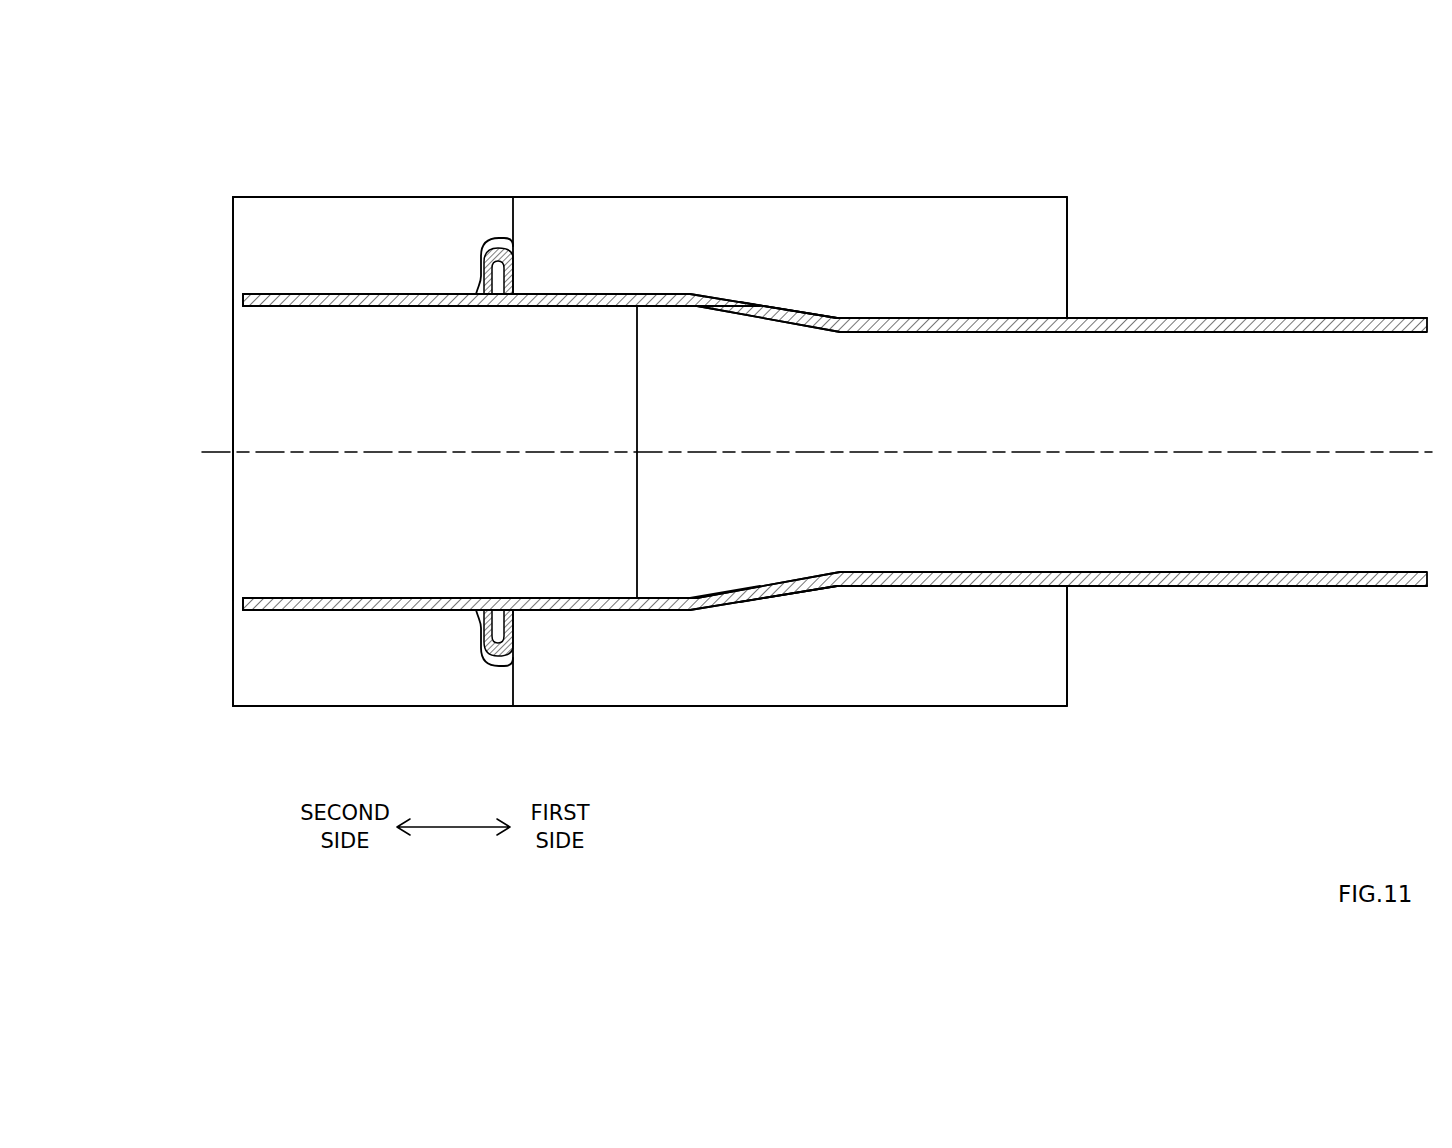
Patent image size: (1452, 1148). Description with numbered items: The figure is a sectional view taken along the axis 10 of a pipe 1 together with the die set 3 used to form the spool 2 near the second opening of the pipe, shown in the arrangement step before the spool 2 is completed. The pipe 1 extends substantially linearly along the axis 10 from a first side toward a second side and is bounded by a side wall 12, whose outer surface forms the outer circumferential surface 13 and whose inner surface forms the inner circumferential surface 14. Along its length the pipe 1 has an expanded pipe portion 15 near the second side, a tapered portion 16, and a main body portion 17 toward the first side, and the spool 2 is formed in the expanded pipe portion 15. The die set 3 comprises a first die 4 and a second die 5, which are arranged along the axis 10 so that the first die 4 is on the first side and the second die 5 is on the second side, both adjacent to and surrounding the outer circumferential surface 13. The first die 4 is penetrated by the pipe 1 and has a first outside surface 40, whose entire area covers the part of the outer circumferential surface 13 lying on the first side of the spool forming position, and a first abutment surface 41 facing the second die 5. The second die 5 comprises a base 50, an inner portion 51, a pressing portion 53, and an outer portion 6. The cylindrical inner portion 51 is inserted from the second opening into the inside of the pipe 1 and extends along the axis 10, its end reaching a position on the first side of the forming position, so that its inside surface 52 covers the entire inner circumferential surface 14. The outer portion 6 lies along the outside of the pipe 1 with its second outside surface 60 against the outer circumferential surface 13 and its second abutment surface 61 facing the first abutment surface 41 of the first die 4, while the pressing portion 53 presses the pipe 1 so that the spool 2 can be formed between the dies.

The pipe 1 is at (1333, 284).
The spool 2 is at (493, 302).
The die set 3 is at (950, 154).
The first die 4 is at (1045, 238).
The second die 5 is at (260, 535).
The outer portion 6 is at (400, 217).
The axis 10 is at (1010, 452).
The side wall 12 is at (647, 597).
The outer circumferential surface 13 is at (302, 292).
The inner circumferential surface 14 is at (308, 310).
The expanded pipe portion 15 is at (623, 264).
The tapered portion 16 is at (767, 288).
The main body portion 17 is at (1150, 300).
The first outside surface 40 is at (667, 295).
The first abutment surface 41 is at (513, 226).
The base 50 is at (240, 405).
The inner portion 51 is at (612, 382).
The inside surface 52 is at (389, 310).
The pressing portion 53 is at (243, 298).
The second outside surface 60 is at (365, 293).
The second abutment surface 61 is at (513, 212).